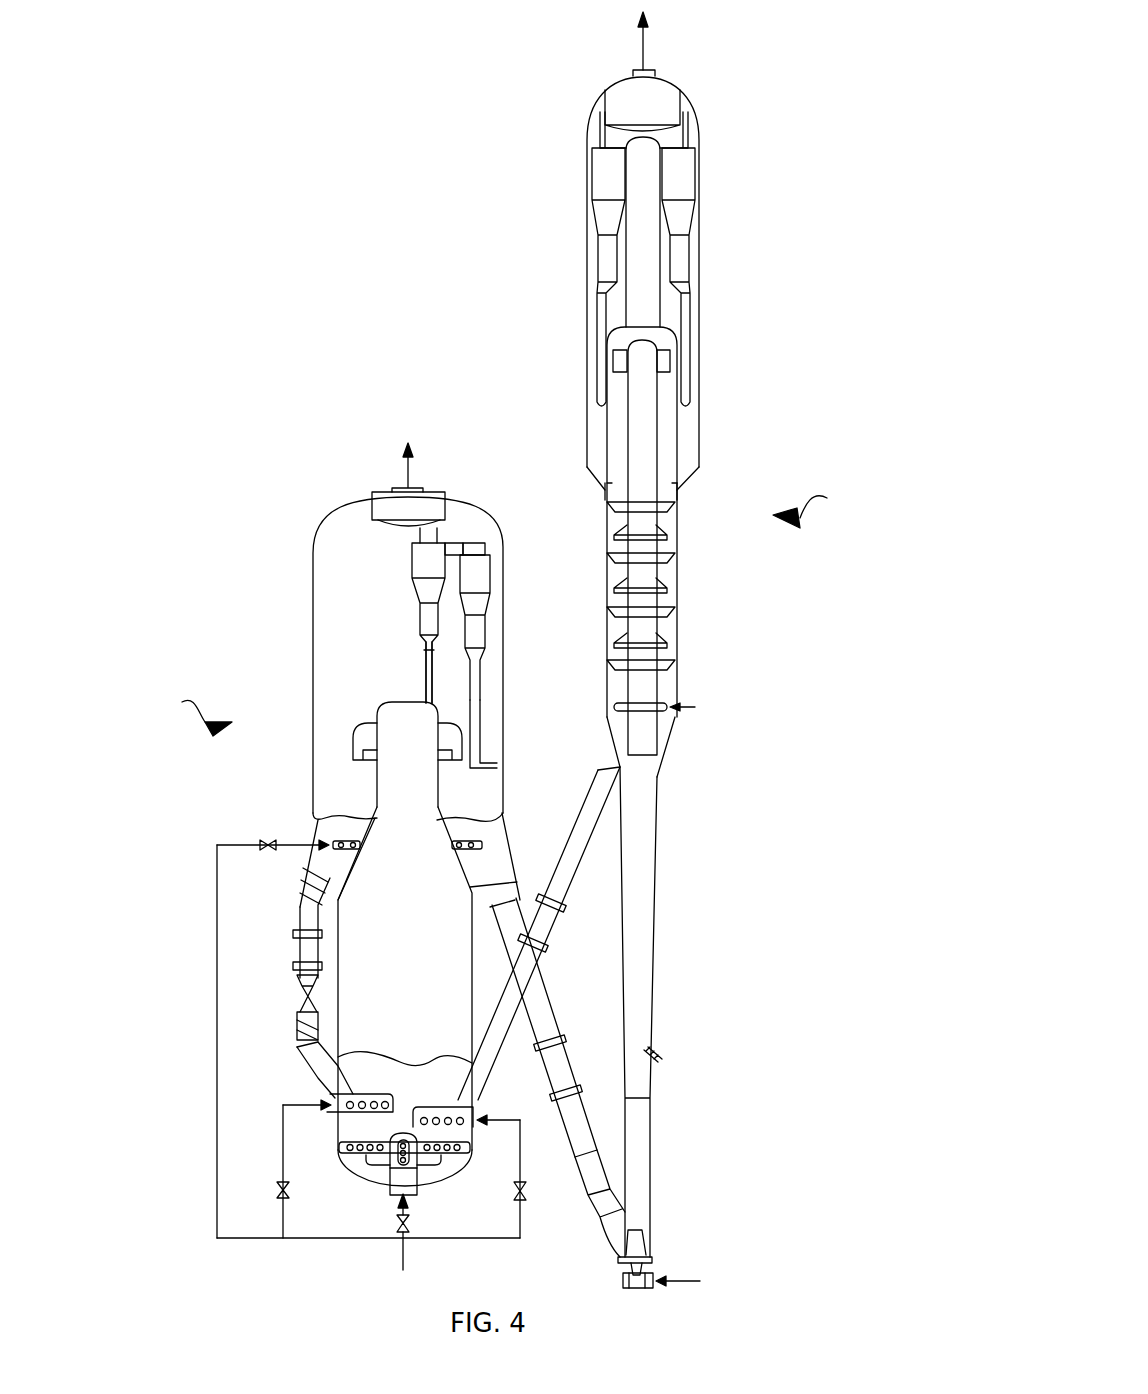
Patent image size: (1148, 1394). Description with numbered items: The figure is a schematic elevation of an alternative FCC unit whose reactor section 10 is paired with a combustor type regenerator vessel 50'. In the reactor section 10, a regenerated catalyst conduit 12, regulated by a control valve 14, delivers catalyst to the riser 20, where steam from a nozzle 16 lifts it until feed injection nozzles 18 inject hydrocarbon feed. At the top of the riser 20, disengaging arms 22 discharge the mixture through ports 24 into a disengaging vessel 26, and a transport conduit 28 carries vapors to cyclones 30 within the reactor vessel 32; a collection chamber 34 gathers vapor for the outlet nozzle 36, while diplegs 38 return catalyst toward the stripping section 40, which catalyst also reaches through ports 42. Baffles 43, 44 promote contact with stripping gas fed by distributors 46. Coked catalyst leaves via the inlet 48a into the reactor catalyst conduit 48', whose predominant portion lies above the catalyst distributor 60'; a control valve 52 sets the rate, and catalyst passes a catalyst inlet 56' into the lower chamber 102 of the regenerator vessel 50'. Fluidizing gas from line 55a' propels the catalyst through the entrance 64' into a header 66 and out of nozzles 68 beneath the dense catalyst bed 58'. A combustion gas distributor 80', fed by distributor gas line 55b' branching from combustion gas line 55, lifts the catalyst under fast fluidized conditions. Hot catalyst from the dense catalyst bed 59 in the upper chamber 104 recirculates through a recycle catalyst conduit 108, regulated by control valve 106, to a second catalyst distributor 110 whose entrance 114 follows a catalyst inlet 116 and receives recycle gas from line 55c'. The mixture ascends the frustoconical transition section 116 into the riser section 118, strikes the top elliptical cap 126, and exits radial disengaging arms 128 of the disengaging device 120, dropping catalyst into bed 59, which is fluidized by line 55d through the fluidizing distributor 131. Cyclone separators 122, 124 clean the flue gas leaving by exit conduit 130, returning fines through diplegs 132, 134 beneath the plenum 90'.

The reactor section 10 is at (817, 507).
The regenerated catalyst conduit 12 is at (540, 1023).
The control valve 14 is at (585, 1177).
The nozzle 16 is at (640, 1290).
The feed injection nozzles 18 is at (660, 1062).
The riser 20 is at (640, 955).
The disengaging arms 22 is at (660, 350).
The ports 24 is at (666, 395).
The disengaging vessel 26 is at (660, 430).
The transport conduit 28 is at (645, 222).
The cyclones 30 is at (682, 165).
The reactor vessel 32 is at (697, 290).
The collection chamber 34 is at (662, 98).
The outlet nozzle 36 is at (640, 78).
The diplegs 38 is at (684, 366).
The stripping section 40 is at (668, 573).
The ports 42 is at (678, 490).
The baffles 43 is at (665, 615).
The baffles 44 is at (652, 584).
The distributors 46 is at (668, 706).
The inlet 48a is at (607, 773).
The reactor catalyst conduit 48' is at (539, 933).
The combustor regenerator vessel 50' is at (190, 712).
The control valve 52 is at (540, 1048).
The catalyst inlet 56' is at (541, 1094).
The dense catalyst bed 58' is at (486, 1045).
The catalyst distributor 60' is at (521, 1129).
The entrance 64' is at (467, 1130).
The header 66 is at (433, 1113).
The nozzles 68 is at (425, 1150).
The combustion gas distributor 80' is at (426, 1173).
The combustion gas line 55 is at (405, 1250).
The fluidizing gas line 55a' is at (526, 1198).
The distributor gas line 55b' is at (435, 1226).
The recycle gas line 55c' is at (317, 1172).
The fluidizing gas line 55d is at (217, 1072).
The dense catalyst bed 59 is at (318, 822).
The regenerator plenum 90' is at (386, 486).
The lower chamber 102 is at (383, 928).
The upper chamber 104 is at (335, 606).
The control valve 106 is at (300, 997).
The recycle catalyst conduit 108 is at (302, 1030).
The catalyst distributor 110 is at (287, 1106).
The entrance 114 is at (365, 1106).
The frustoconical transition section 116 is at (340, 1092).
The riser section 118 is at (423, 790).
The disengaging device 120 is at (326, 733).
The cyclone separator 122 is at (478, 580).
The cyclone separator 124 is at (428, 565).
The top elliptical cap 126 is at (383, 700).
The radial disengaging arms 128 is at (365, 728).
The exit conduit 130 is at (432, 495).
The fluidizing distributor 131 is at (484, 845).
The dipleg 132 is at (480, 695).
The dipleg 134 is at (428, 657).